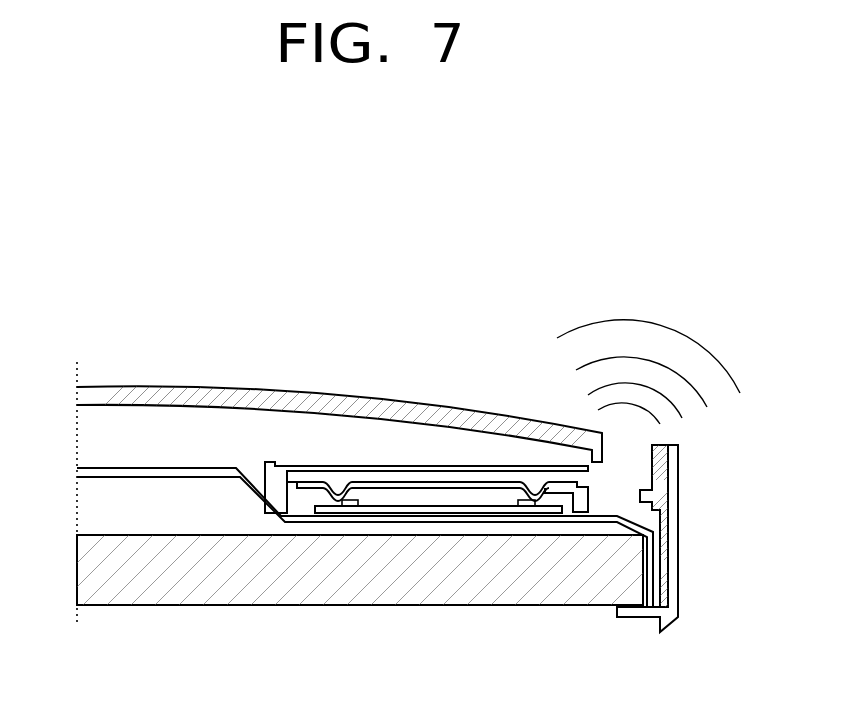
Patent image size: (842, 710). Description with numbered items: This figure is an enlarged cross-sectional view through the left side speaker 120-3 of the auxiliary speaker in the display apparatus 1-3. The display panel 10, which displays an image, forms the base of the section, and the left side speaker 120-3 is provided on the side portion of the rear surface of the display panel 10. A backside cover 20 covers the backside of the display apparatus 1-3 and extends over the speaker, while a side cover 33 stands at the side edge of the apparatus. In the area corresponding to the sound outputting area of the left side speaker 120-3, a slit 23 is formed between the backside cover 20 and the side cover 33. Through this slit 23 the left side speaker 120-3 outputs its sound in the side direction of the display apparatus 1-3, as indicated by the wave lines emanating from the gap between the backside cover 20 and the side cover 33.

The display apparatus 1-3 is at (388, 171).
The display panel 10 is at (254, 606).
The backside cover 20 is at (308, 392).
The slit 23 is at (622, 449).
The side cover 33 is at (680, 519).
The left side speaker 120-3 is at (413, 478).